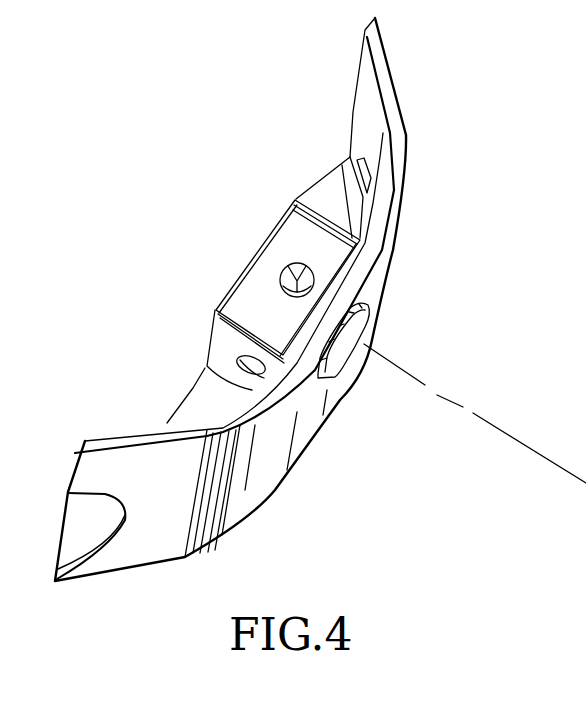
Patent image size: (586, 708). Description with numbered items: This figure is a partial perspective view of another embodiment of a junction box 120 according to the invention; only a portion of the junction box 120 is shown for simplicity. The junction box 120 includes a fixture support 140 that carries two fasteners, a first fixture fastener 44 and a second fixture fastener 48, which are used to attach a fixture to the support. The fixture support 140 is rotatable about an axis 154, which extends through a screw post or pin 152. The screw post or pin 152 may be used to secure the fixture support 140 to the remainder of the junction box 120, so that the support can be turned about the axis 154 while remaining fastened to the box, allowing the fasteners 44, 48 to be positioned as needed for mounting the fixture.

The junction box 120 is at (421, 144).
The fixture support 140 is at (248, 294).
The first fixture fastener 44 is at (281, 268).
The second fixture fastener 48 is at (207, 377).
The screw post or pin 152 is at (372, 317).
The axis 154 is at (437, 397).